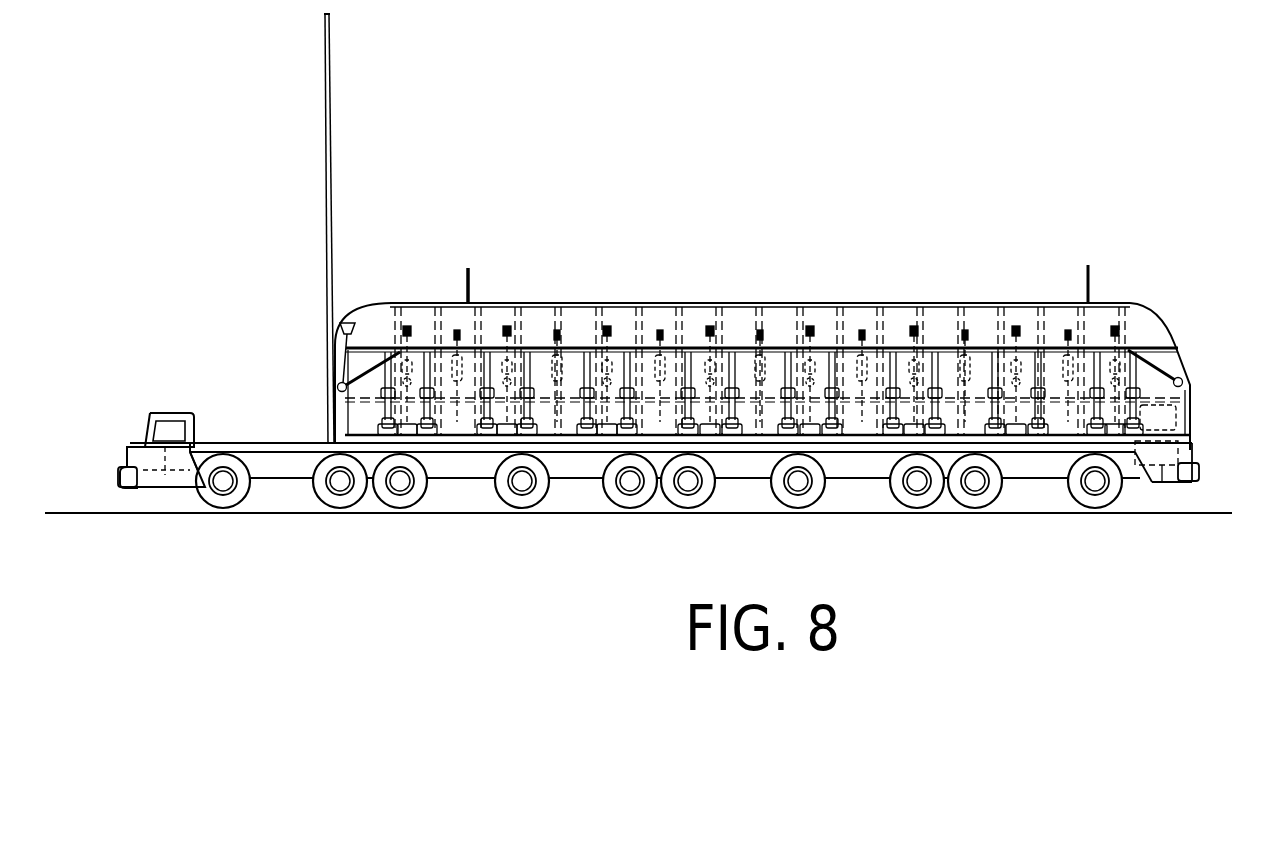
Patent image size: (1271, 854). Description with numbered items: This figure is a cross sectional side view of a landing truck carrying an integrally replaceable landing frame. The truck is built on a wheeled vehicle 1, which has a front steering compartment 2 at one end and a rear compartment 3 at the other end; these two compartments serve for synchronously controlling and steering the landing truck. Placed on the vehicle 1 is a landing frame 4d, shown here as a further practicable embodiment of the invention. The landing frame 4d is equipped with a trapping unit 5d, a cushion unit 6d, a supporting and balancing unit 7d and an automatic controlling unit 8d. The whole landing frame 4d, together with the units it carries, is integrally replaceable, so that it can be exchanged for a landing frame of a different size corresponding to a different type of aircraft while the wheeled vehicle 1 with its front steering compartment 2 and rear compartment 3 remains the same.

The wheeled vehicle 1 is at (280, 478).
The front steering compartment 2 is at (164, 408).
The rear compartment 3 is at (1162, 492).
The landing frame 4d is at (355, 411).
The trapping unit 5d is at (797, 300).
The cushion unit 6d is at (880, 348).
The supporting and balancing unit 7d is at (412, 300).
The automatic controlling unit 8d is at (478, 278).